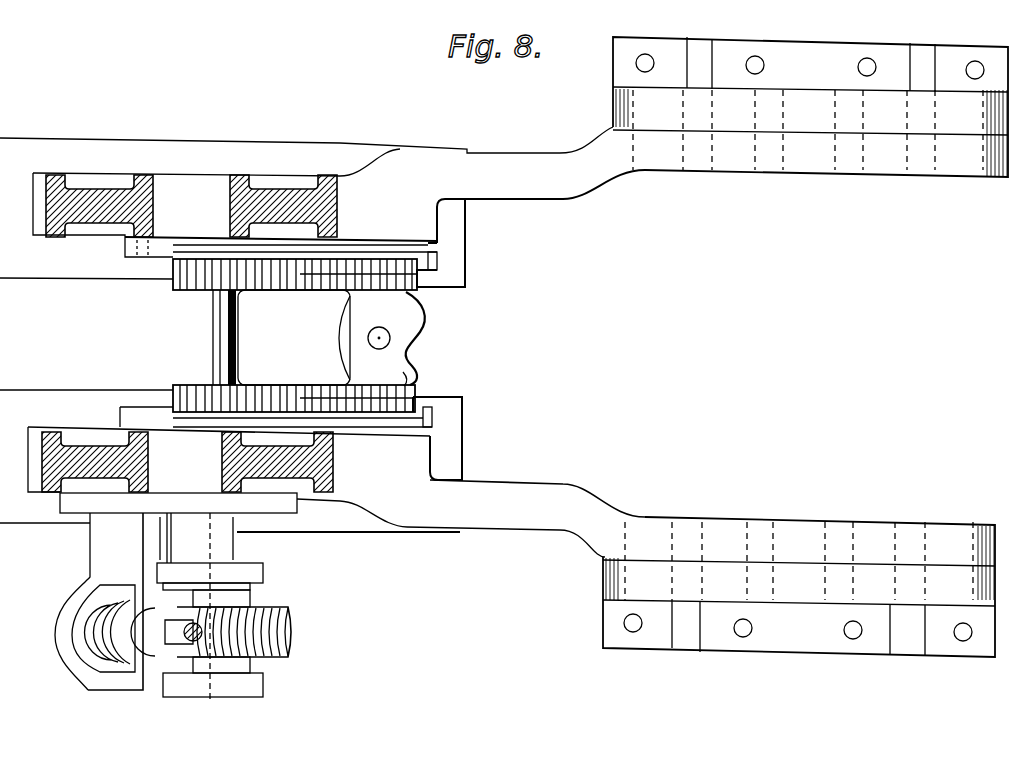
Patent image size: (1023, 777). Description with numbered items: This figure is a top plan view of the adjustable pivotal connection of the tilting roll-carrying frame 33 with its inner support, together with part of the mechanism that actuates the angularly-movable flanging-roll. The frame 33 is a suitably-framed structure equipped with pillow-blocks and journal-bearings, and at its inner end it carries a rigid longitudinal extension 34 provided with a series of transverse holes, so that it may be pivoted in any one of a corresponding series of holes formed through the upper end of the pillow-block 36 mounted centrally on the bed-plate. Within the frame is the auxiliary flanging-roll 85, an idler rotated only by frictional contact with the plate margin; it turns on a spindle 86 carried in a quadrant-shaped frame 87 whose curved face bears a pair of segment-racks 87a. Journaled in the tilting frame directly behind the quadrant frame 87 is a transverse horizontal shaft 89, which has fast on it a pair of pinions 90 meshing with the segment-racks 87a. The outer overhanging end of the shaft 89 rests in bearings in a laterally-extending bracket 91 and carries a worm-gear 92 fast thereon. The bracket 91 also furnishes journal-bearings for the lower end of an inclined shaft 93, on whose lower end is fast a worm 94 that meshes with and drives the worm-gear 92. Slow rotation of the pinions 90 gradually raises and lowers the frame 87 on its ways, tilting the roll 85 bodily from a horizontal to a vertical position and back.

The roll-carrying frame 33 is at (88, 190).
The longitudinal extension 34 is at (526, 363).
The pillow-block 36 is at (805, 347).
The auxiliary flanging-roll 85 is at (412, 323).
The spindle 86 is at (392, 338).
The quadrant-shaped frame 87 is at (392, 376).
The segment-racks 87a is at (304, 385).
The transverse horizontal shaft 89 is at (220, 328).
The pinions 90 is at (185, 281).
The laterally-extending bracket 91 is at (189, 683).
The worm-gear 92 is at (292, 633).
The inclined shaft 93 is at (180, 642).
The worm 94 is at (115, 647).